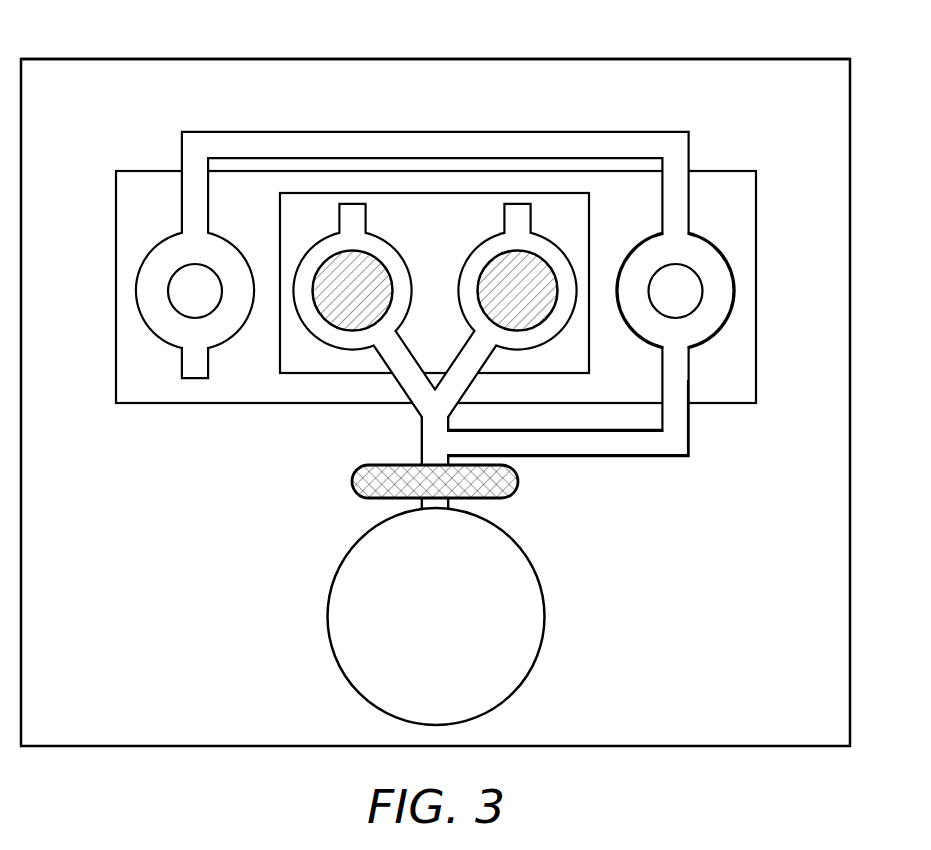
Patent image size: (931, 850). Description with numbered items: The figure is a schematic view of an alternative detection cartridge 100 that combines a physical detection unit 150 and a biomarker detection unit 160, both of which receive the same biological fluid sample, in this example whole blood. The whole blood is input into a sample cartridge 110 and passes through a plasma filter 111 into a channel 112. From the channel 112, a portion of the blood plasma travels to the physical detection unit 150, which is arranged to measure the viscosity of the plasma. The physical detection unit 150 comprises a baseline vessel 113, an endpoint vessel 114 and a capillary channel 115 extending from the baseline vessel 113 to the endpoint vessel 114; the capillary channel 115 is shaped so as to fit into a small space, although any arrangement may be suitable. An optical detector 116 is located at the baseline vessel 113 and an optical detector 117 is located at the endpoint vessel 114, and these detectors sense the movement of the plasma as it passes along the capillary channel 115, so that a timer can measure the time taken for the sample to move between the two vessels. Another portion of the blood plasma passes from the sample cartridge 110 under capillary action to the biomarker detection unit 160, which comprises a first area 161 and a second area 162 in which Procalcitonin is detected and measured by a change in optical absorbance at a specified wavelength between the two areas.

The detection cartridge 100 is at (48, 58).
The physical detection unit 150 is at (790, 95).
The capillary channel 115 is at (432, 133).
The biomarker detection unit 160 is at (559, 192).
The endpoint vessel 114 is at (723, 170).
The optical detector 117 is at (168, 298).
The baseline vessel 113 is at (733, 281).
The optical detector 116 is at (703, 297).
The first area 161 is at (491, 262).
The second area 162 is at (332, 329).
The channel 112 is at (689, 437).
The plasma filter 111 is at (519, 480).
The sample cartridge 110 is at (546, 607).